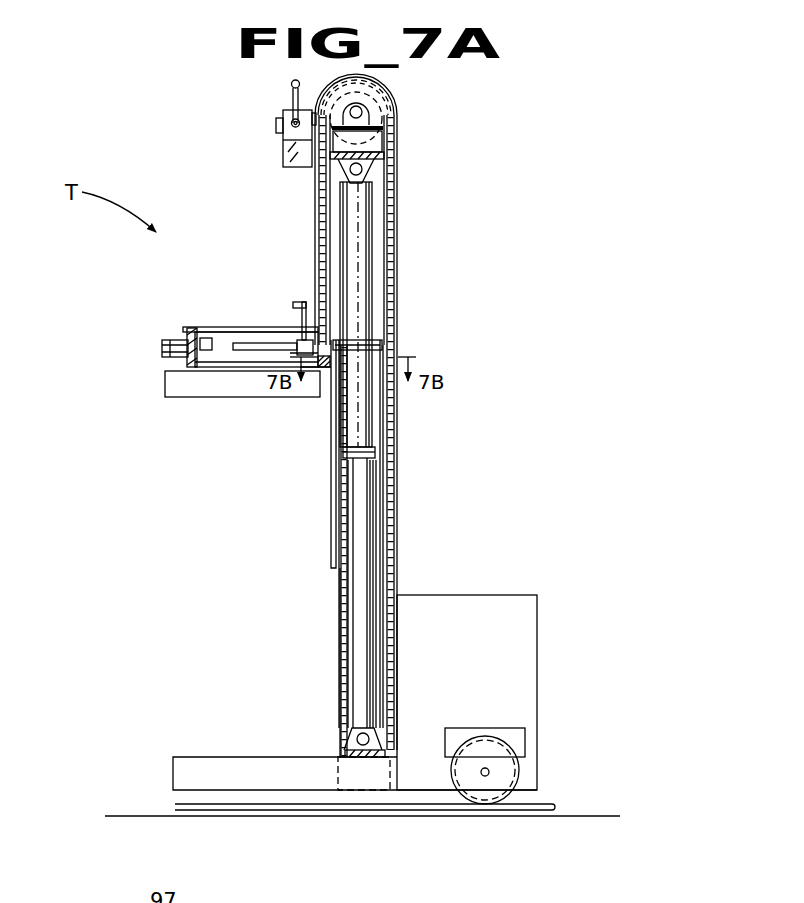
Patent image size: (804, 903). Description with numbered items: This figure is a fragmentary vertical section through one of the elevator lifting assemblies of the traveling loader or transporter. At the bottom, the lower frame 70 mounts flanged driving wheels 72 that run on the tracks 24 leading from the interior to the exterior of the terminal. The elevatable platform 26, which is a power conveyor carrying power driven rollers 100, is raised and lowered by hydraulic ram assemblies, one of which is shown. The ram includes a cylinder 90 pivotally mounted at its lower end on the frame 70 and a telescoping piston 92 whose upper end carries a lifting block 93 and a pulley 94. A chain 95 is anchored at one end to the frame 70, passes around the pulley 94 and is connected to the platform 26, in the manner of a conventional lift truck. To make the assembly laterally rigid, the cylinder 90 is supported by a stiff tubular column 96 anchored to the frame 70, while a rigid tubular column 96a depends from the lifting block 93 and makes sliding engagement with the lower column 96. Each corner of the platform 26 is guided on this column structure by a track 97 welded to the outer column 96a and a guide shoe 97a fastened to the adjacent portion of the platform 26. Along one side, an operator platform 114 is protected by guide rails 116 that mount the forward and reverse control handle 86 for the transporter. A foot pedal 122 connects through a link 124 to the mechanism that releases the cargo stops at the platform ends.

The tracks 24 is at (190, 806).
The elevatable platform 26 is at (176, 406).
The lower frame 70 is at (227, 770).
The driving wheels 72 is at (500, 803).
The control valve handle 86 is at (283, 108).
The cylinder 90 is at (358, 470).
The telescoping piston 92 is at (355, 228).
The lifting block 93 is at (378, 134).
The pulley 94 is at (373, 92).
The chain 95 is at (395, 172).
The tubular column 96 is at (342, 656).
The rigid tubular column 96a is at (390, 292).
The track 97 is at (330, 504).
The guide shoe 97a is at (323, 385).
The power driven rollers 100 is at (172, 338).
The platform 114 is at (222, 327).
The guide rails 116 is at (328, 113).
The foot pedal 122 is at (303, 300).
The link 124 is at (298, 332).